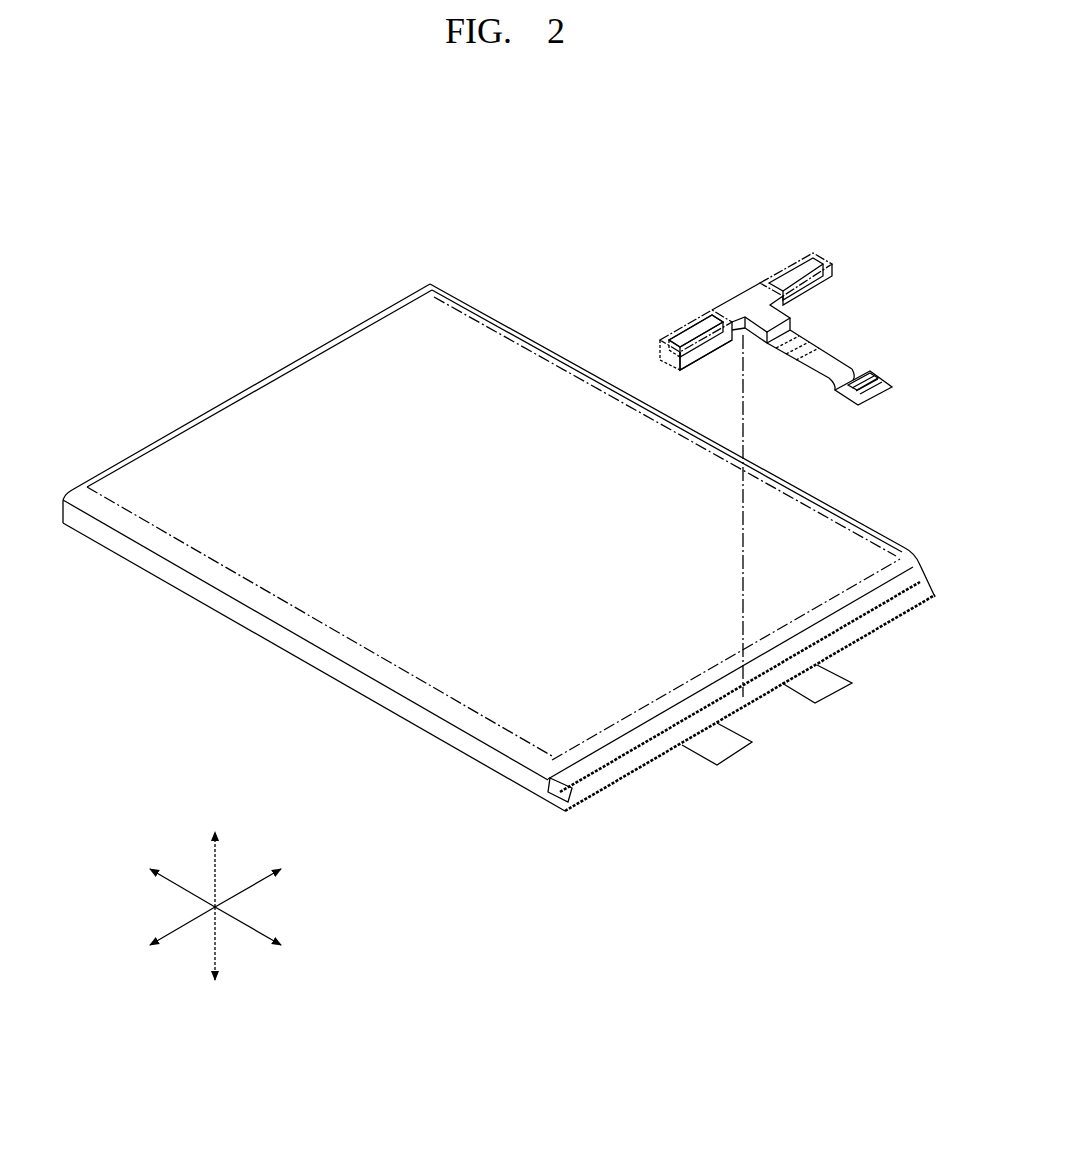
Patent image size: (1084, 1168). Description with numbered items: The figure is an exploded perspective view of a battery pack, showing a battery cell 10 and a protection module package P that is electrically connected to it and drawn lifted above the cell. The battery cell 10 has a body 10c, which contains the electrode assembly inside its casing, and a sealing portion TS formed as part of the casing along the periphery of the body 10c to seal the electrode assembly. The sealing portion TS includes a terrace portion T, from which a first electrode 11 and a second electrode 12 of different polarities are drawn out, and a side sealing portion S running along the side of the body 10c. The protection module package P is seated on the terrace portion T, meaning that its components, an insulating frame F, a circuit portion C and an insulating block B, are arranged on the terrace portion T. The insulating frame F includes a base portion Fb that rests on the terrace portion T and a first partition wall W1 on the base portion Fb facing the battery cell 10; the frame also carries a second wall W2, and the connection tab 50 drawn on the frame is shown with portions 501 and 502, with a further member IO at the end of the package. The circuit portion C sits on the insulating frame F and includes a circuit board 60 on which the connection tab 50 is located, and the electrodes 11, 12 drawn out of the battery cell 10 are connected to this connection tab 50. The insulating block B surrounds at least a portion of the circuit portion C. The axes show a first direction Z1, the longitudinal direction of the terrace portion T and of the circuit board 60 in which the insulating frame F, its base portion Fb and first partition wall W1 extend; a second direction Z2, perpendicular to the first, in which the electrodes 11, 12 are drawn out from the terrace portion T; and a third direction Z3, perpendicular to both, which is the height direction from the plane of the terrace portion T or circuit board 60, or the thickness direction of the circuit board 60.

The battery cell 10 is at (181, 611).
The body 10c is at (172, 455).
The electrode 11 is at (733, 745).
The electrode 12 is at (835, 690).
The connection tab 50 is at (693, 319).
The first frame 501 is at (700, 342).
The second frame 502 is at (803, 278).
The circuit board 60 is at (700, 357).
The insulating block B is at (748, 300).
The circuit portion C is at (823, 252).
The insulating frame F is at (742, 313).
The base portion Fb is at (823, 300).
The input/output connector IO is at (850, 376).
The protection module package P is at (780, 377).
The first partition wall W1 is at (673, 335).
The second width W2 is at (672, 350).
The side sealing portion S is at (538, 788).
The terrace portion T is at (594, 788).
The sealing portion TS is at (597, 865).
The first direction Z1 is at (231, 896).
The second direction Z2 is at (231, 916).
The third direction Z3 is at (213, 891).